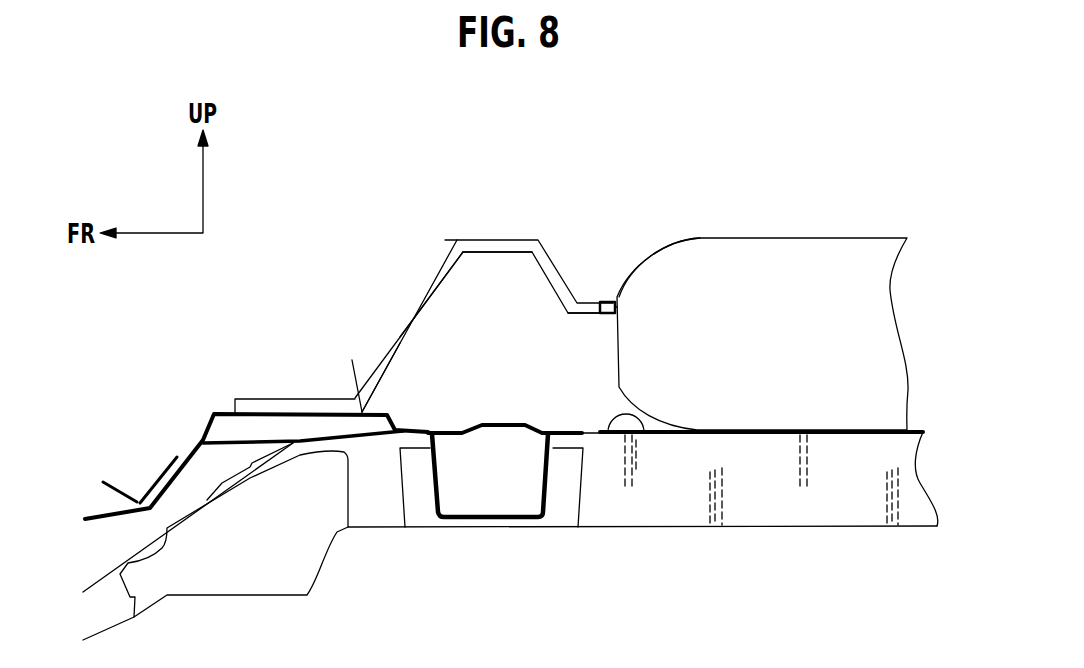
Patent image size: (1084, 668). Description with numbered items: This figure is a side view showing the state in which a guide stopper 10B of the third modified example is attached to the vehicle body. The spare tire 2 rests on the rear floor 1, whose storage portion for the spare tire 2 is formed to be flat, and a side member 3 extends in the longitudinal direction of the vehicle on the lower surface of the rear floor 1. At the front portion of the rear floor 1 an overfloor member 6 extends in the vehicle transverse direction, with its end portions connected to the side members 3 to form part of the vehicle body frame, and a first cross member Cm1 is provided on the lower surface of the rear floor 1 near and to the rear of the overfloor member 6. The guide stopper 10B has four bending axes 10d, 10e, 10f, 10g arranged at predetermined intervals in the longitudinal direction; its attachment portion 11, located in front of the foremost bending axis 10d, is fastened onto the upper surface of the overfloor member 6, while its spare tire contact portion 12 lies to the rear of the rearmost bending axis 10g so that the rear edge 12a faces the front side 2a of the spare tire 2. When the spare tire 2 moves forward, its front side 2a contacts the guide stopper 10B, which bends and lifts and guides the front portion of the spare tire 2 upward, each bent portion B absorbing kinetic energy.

The rear floor 1 is at (612, 432).
The spare tire 2 is at (807, 275).
The front side of the spare tire 2a is at (631, 298).
The side member 3 is at (807, 510).
The overfloor member 6 is at (223, 408).
The attachment portion 11 is at (277, 397).
The spare tire contact portion 12 is at (599, 301).
The rear edge of the spare tire contact portion 12a is at (617, 307).
The guide stopper 10B is at (446, 205).
The bending axis 10d is at (353, 394).
The bending axis 10e is at (463, 256).
The bending axis 10f is at (530, 258).
The bending axis 10g is at (568, 316).
The first cross member Cm1 is at (430, 495).
The bent portion B is at (356, 352).